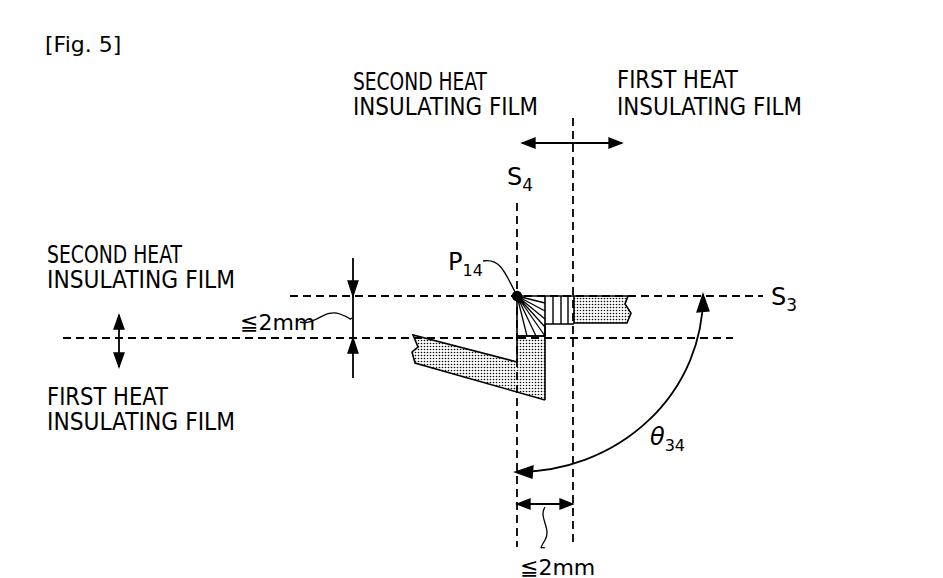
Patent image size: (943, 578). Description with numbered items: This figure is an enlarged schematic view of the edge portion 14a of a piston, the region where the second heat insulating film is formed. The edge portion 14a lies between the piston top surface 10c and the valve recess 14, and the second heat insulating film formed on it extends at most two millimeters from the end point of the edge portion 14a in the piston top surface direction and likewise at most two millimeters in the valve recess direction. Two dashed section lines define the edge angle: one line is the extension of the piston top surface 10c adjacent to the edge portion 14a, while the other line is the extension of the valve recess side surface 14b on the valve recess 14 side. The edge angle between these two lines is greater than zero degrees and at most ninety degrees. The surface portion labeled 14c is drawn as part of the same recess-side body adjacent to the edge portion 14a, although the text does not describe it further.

The valve recess 14 is at (474, 364).
The edge portion 14a is at (545, 296).
The valve recess side surface 14b is at (512, 348).
The horizontal portion of bent portion 14c is at (468, 342).
The piston top surface 10c is at (608, 296).